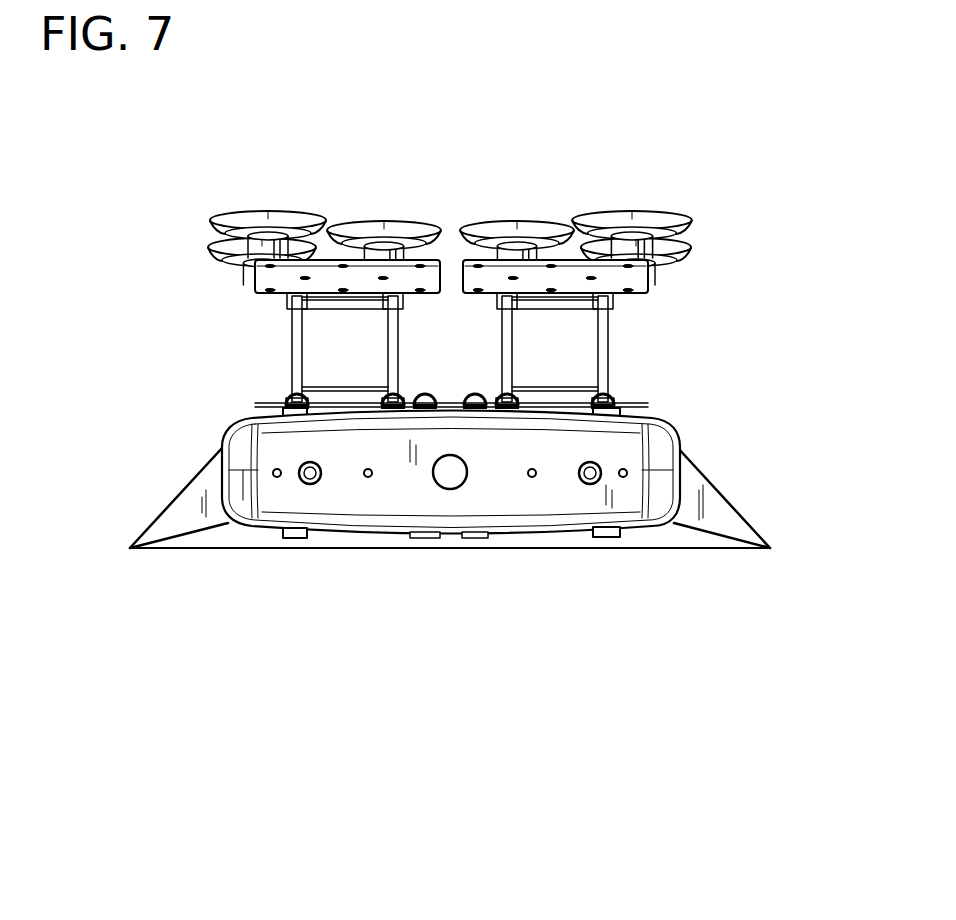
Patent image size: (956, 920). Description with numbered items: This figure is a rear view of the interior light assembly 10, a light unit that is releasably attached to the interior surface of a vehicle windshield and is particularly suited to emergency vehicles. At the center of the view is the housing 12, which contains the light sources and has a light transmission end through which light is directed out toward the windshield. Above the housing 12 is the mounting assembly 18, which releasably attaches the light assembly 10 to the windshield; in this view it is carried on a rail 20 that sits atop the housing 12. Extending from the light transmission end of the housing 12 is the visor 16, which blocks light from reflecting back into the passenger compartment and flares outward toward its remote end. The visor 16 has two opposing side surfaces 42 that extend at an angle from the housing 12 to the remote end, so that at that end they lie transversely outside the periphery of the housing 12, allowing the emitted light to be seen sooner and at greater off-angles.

The interior light assembly 10 is at (145, 662).
The housing 12 is at (660, 445).
The visor 16 is at (750, 533).
The mounting assembly 18 is at (452, 222).
The mounting rail 20 is at (257, 410).
The opposing side surfaces 42 is at (182, 513).